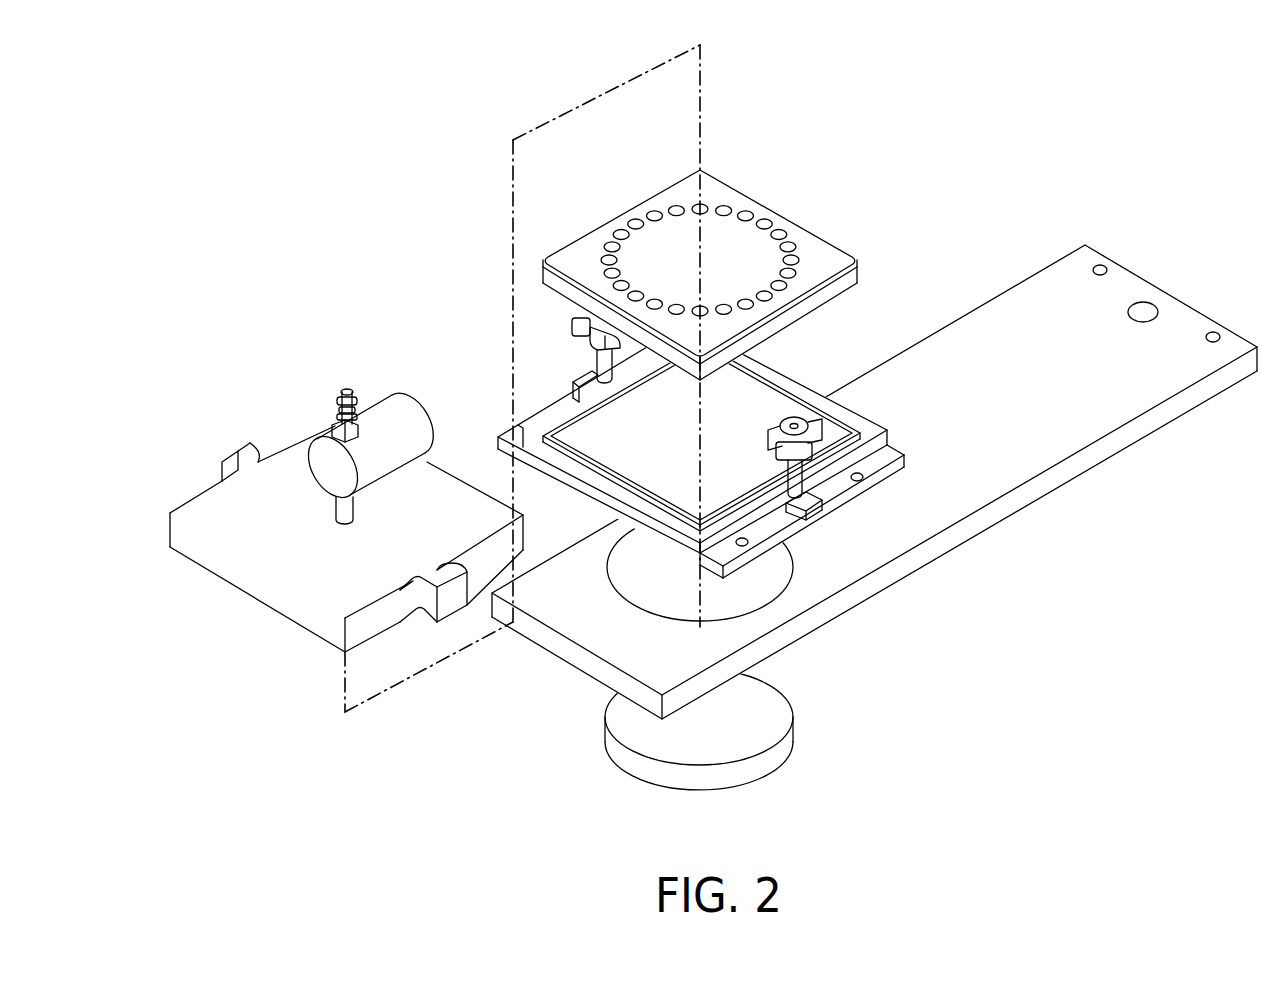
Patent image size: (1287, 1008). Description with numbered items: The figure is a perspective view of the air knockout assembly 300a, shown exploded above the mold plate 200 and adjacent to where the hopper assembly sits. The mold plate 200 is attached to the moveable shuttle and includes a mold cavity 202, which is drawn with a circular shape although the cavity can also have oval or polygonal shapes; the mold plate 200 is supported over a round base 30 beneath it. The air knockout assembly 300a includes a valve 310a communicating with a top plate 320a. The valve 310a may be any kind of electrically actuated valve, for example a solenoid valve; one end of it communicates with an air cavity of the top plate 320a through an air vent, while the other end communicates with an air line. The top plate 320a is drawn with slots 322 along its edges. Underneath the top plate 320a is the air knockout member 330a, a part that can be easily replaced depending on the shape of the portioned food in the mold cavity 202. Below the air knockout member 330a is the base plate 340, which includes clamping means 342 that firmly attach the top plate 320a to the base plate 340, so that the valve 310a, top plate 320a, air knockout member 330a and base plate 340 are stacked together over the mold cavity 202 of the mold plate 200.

The base 30 is at (792, 727).
The mold plate 200 is at (1053, 282).
The mold cavity 202 is at (637, 583).
The air knockout assembly 300a is at (766, 140).
The valve 310a is at (385, 402).
The top plate 320a is at (308, 632).
The slots 322 is at (237, 452).
The air knockout member 330a is at (810, 230).
The base plate 340 is at (796, 380).
The clamping means 342 is at (572, 325).